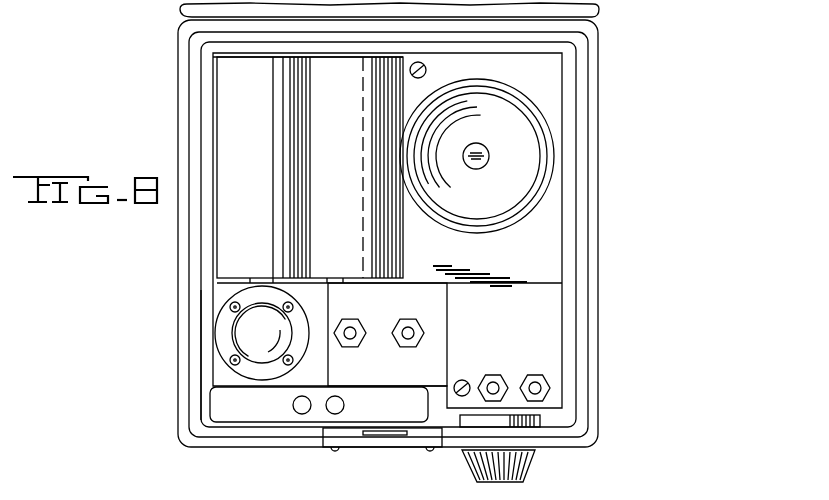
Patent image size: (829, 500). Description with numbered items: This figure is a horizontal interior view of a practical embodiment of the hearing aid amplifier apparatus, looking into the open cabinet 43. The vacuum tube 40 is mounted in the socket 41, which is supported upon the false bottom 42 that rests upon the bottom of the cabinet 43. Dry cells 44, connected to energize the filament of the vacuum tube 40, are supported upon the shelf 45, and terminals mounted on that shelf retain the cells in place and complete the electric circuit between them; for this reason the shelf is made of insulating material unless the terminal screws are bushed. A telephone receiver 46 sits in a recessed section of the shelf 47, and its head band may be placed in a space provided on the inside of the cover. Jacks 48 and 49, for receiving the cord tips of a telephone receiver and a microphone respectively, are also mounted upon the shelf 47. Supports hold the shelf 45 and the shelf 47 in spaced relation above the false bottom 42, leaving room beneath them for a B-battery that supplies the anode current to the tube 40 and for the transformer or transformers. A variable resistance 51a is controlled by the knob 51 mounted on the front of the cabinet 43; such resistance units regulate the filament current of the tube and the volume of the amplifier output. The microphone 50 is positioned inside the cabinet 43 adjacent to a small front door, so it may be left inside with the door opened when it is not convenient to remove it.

The vacuum tube 40 is at (233, 355).
The socket 41 is at (218, 325).
The false bottom 42 is at (212, 300).
The cabinet 43 is at (350, 54).
The dry cells 44 is at (340, 226).
The shelf 45 is at (250, 272).
The telephone receiver 46 is at (526, 161).
The shelf 47 is at (545, 226).
The jack 48 is at (363, 321).
The jack 49 is at (533, 377).
The microphone 50 is at (280, 413).
The knob 51 is at (534, 470).
The variable resistance 51a is at (548, 420).